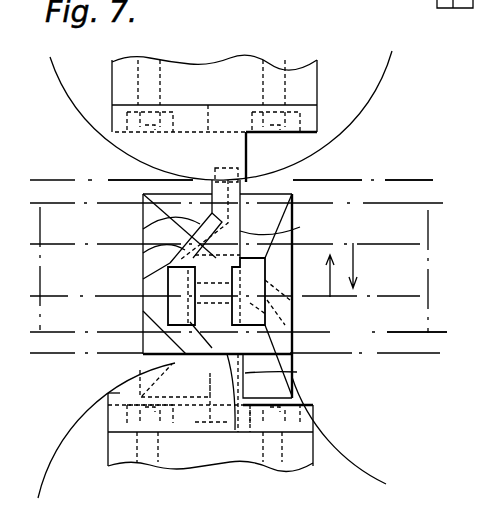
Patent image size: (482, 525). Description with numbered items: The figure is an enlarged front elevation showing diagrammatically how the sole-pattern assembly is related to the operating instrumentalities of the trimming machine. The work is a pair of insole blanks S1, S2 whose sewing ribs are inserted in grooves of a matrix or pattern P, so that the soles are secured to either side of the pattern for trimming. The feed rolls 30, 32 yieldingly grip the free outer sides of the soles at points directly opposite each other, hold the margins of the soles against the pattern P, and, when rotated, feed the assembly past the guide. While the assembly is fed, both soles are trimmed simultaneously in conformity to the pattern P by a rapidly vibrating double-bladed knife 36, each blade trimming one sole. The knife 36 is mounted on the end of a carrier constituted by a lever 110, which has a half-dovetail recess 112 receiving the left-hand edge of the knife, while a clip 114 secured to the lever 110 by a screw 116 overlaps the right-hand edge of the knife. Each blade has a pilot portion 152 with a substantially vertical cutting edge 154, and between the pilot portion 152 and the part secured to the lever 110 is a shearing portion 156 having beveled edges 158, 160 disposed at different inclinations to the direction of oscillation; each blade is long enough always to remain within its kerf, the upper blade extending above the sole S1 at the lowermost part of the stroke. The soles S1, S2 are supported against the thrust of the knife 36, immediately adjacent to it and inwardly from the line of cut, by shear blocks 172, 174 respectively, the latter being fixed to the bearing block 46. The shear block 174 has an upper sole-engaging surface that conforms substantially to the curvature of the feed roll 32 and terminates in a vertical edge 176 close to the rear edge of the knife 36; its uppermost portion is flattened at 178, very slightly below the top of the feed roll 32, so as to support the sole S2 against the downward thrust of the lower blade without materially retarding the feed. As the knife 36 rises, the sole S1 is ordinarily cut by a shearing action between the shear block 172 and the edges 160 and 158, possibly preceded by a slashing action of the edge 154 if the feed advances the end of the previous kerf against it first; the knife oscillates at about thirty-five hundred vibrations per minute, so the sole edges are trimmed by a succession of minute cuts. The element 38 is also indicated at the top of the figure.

The housing 38 is at (436, 6).
The feed roll 30 is at (358, 120).
The feed roll 32 is at (355, 403).
The shear block 172 is at (248, 148).
The cutting edge 154 is at (198, 180).
The pilot portion 152 is at (287, 178).
The insole blank S1 is at (412, 179).
The insole blank S2 is at (442, 324).
The pattern P is at (420, 275).
The lever 110 is at (150, 264).
The knife 36 is at (249, 220).
The shearing edge 160 is at (143, 228).
The shearing edge 158 is at (148, 255).
The half-dovetail recess 112 is at (150, 313).
The screw 116 is at (283, 315).
The clip 114 is at (293, 342).
The vertical edge 176 is at (297, 372).
The shearing portion 156 is at (300, 227).
The flattened portion 178 is at (240, 418).
The bearing block 46 is at (300, 457).
The shear block 174 is at (120, 393).